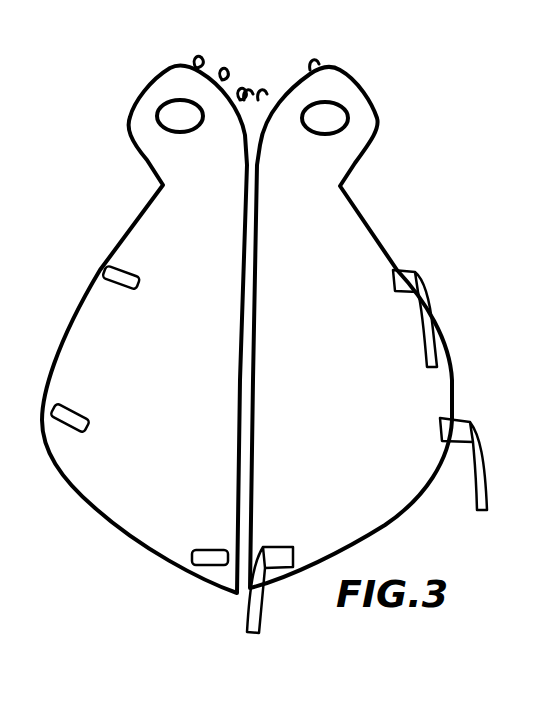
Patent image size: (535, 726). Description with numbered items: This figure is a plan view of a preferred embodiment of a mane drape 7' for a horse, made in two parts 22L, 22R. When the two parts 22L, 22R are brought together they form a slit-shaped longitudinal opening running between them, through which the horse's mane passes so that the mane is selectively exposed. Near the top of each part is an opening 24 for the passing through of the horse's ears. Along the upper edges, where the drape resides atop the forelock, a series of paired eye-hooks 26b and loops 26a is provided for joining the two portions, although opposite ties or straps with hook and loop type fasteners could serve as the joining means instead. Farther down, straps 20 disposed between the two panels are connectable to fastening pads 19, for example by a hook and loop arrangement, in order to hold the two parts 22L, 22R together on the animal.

The mane drape 7' is at (77, 183).
The fastening pads 19 is at (100, 270).
The straps 20 is at (402, 272).
The left part of mane drape 22L is at (144, 329).
The right part of mane drape 22R is at (351, 327).
The openings 24 is at (348, 108).
The loops 26a is at (197, 58).
The eye-hooks 26b is at (293, 82).